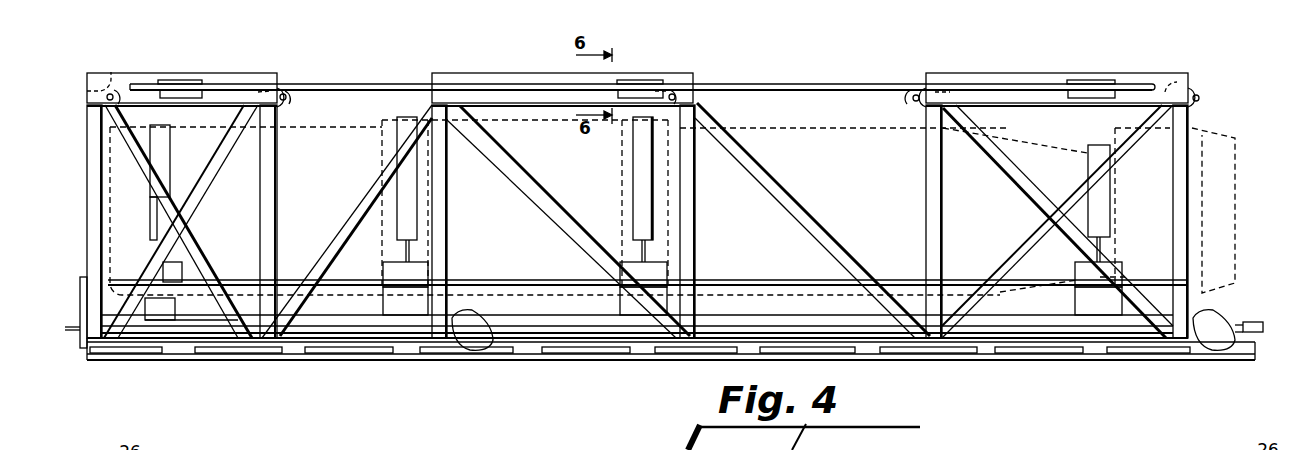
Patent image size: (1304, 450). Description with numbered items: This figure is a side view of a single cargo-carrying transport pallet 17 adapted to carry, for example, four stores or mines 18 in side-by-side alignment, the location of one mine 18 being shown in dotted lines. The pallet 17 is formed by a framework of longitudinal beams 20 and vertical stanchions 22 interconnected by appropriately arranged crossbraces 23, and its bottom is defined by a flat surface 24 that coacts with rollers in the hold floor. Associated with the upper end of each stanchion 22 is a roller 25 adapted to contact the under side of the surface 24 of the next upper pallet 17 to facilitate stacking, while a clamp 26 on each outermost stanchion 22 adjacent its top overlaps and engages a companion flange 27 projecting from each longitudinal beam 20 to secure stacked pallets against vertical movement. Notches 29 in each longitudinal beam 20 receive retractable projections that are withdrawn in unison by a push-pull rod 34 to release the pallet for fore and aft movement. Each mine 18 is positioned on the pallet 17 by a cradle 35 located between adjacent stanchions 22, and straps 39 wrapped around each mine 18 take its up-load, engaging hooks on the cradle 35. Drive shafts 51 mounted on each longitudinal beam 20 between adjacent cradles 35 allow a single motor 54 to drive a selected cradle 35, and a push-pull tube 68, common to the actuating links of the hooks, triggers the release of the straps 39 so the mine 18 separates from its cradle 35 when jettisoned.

The transport pallet 17 is at (77, 290).
The store or mine 18 is at (844, 128).
The longitudinal beam 20 is at (1025, 340).
The vertical stanchion 22 is at (93, 177).
The crossbrace 23 is at (198, 247).
The flat surface 24 is at (1210, 358).
The roller 25 is at (112, 72).
The clamp 26 is at (192, 80).
The flange 27 is at (218, 348).
The notch 29 is at (297, 348).
The push-pull rod 34 is at (805, 83).
The cradle 35 is at (817, 315).
The strap 39 is at (165, 153).
The drive shaft 51 is at (1112, 328).
The motor 54 is at (1258, 322).
The push-pull rod or tube 68 is at (751, 283).